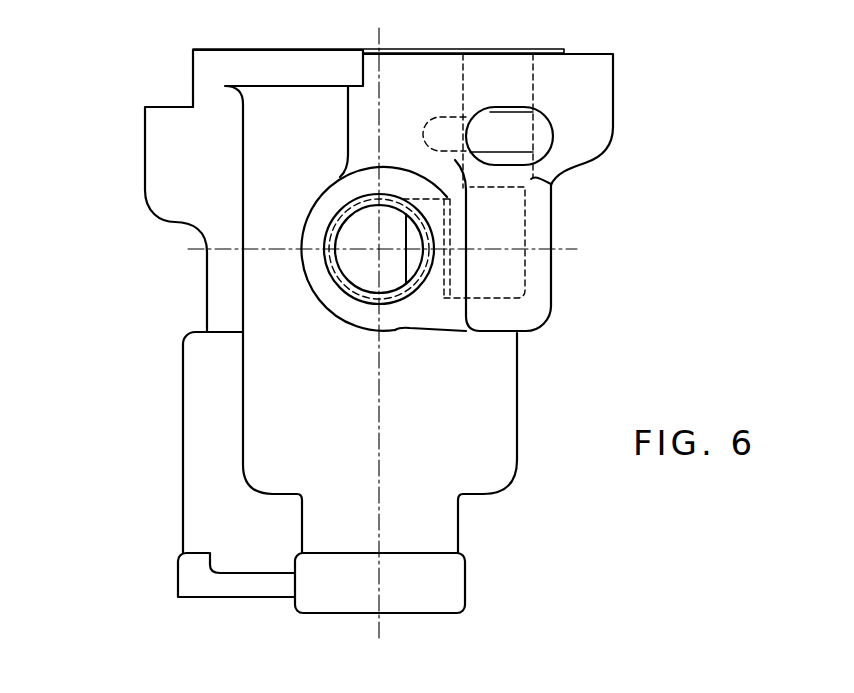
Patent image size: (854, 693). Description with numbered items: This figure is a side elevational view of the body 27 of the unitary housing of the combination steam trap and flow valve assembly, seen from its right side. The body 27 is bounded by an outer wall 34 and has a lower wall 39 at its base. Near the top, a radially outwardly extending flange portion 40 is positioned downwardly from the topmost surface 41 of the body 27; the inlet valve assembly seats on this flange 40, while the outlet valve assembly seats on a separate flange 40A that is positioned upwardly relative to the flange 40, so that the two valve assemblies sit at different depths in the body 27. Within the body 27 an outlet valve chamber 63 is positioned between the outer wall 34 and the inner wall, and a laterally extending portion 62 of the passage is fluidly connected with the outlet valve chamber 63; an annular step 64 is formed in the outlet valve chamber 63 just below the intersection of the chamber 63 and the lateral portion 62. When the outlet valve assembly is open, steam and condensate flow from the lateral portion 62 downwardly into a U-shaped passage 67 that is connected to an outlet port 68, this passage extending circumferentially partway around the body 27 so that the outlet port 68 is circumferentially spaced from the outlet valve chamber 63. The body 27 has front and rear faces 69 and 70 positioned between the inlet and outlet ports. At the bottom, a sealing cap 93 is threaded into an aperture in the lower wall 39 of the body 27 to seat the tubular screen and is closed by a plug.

The body 27 is at (117, 160).
The outer wall 34 is at (517, 368).
The lower wall 39 is at (345, 613).
The flange portion 40 is at (167, 105).
The flange 40A is at (590, 52).
The topmost surface 41 is at (397, 48).
The laterally extending portion 62 is at (520, 148).
The outlet valve chamber 63 is at (533, 88).
The annular step 64 is at (553, 183).
The U-shaped passage 67 is at (525, 232).
The outlet port 68 is at (335, 262).
The front face 69 is at (573, 327).
The rear face 70 is at (155, 253).
The sealing cap 93 is at (210, 598).